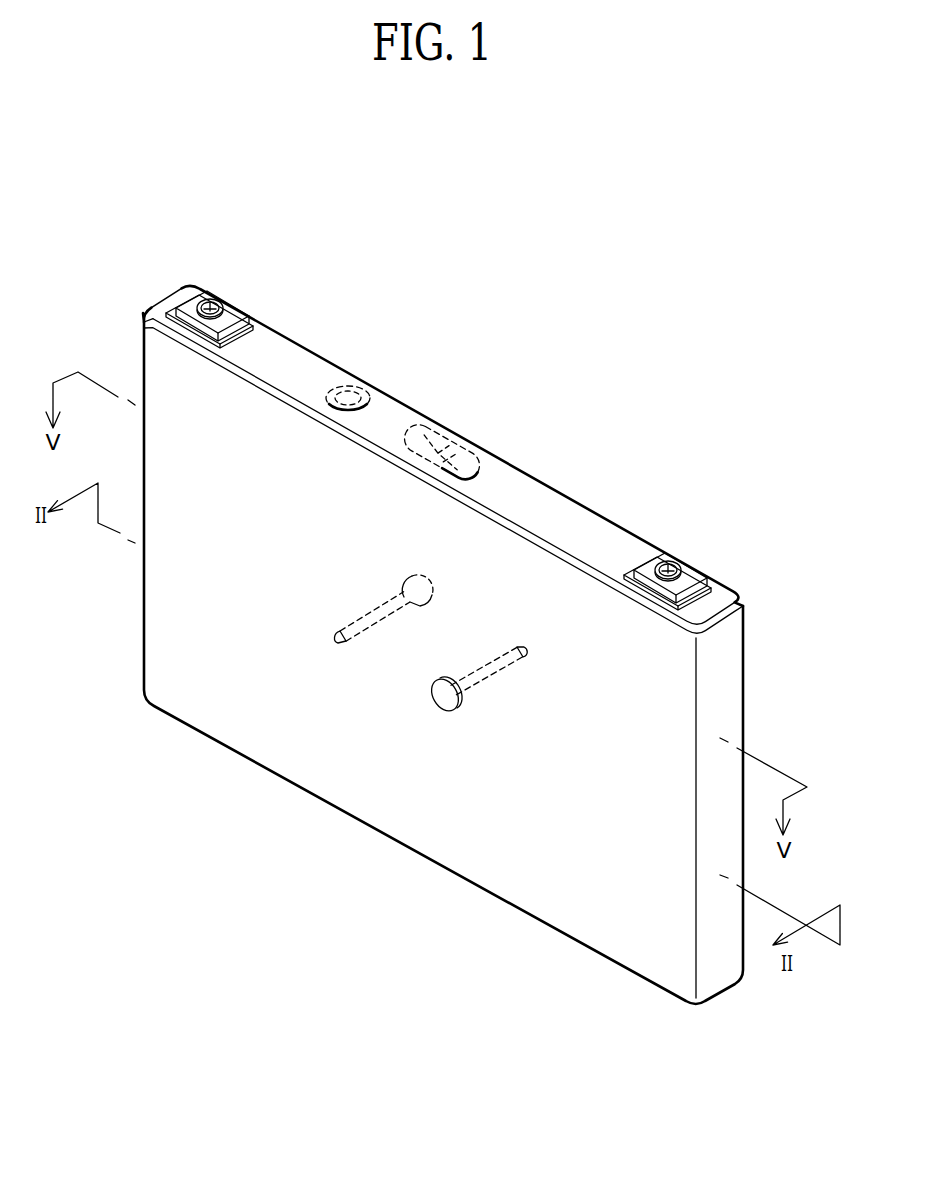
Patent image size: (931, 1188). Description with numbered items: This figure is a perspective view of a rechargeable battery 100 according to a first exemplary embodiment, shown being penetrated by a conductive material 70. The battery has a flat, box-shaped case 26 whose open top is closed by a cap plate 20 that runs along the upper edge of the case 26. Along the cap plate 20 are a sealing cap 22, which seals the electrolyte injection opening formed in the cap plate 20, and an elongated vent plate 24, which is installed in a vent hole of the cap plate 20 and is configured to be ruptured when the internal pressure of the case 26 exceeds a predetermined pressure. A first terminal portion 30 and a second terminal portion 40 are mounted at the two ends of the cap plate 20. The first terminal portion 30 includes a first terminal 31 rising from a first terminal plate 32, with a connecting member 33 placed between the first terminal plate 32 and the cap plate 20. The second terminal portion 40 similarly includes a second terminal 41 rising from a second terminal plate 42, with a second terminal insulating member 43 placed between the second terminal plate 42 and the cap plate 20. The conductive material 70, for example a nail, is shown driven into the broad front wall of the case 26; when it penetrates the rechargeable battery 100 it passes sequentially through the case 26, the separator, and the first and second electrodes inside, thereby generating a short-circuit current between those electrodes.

The rechargeable battery 100 is at (457, 210).
The cap plate 20 is at (560, 507).
The sealing cap 22 is at (350, 393).
The vent plate 24 is at (445, 450).
The case 26 is at (473, 845).
The first terminal portion 30 is at (260, 207).
The first terminal 31 is at (210, 303).
The first terminal plate 32 is at (195, 303).
The connecting member 33 is at (171, 312).
The second terminal portion 40 is at (781, 504).
The second terminal 41 is at (668, 566).
The second terminal plate 42 is at (697, 578).
The second terminal insulating member 43 is at (712, 582).
The conductive material 70 is at (442, 697).